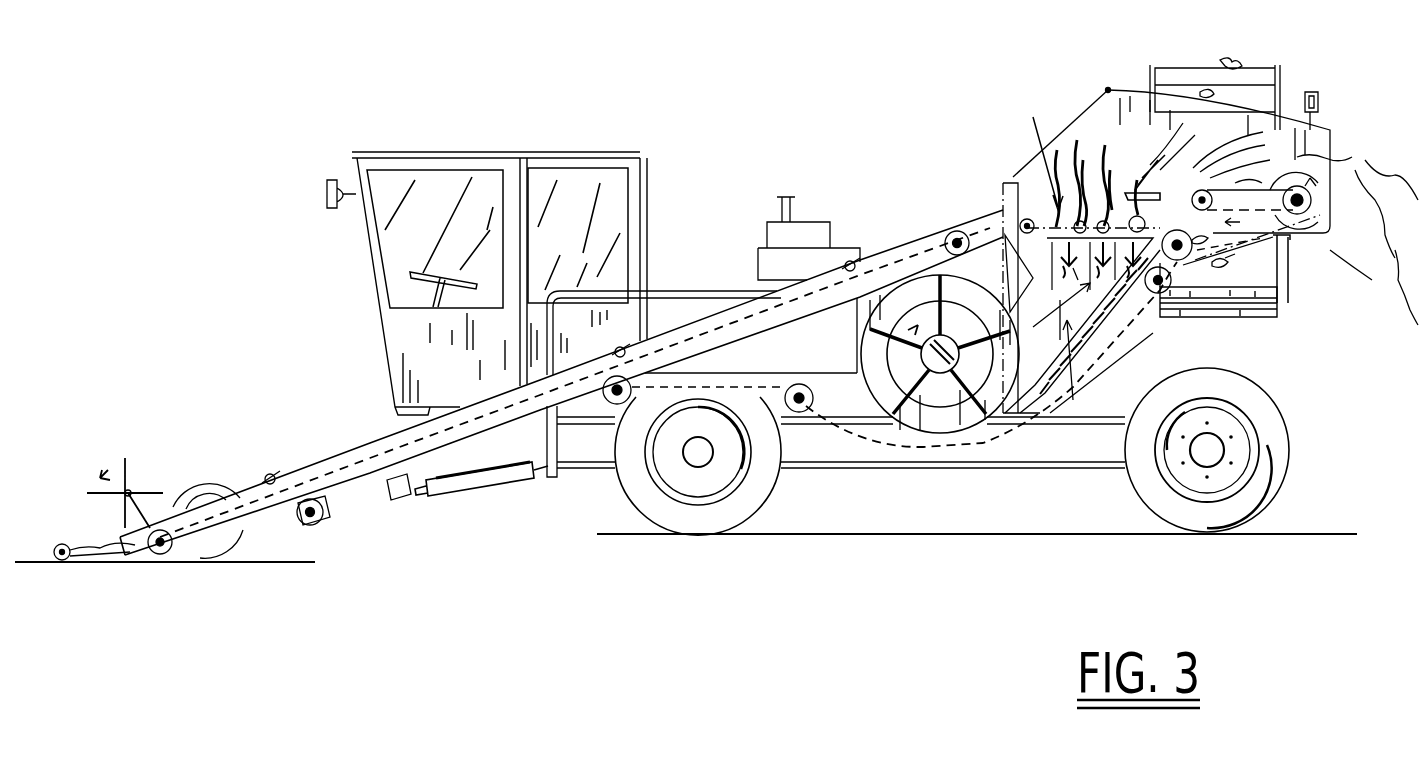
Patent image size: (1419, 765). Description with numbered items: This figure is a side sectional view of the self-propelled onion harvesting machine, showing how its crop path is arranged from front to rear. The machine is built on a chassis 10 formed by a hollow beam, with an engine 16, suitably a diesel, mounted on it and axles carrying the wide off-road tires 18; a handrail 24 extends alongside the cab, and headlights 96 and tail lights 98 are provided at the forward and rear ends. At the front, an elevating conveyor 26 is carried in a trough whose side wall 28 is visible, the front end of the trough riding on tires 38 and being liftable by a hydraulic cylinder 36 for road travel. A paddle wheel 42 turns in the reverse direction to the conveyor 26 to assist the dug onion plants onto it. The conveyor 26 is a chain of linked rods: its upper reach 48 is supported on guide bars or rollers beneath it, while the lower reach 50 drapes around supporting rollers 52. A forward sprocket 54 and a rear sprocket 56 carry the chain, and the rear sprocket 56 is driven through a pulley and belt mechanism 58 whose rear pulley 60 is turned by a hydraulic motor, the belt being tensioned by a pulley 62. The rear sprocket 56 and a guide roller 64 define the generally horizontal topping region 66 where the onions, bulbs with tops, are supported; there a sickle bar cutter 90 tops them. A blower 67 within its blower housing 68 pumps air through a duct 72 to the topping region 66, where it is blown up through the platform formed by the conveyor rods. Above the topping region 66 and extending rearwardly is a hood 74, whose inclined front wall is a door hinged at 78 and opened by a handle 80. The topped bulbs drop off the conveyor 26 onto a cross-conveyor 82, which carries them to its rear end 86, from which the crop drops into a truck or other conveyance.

The chassis 10 is at (1117, 457).
The engine 16 is at (843, 247).
The tires 18 is at (773, 492).
The handrail 24 is at (672, 290).
The elevating conveyor 26 is at (507, 400).
The side wall 28 is at (576, 382).
The hydraulic cylinder 36 is at (473, 494).
The tires 38 is at (238, 553).
The paddle wheel 42 is at (130, 472).
The upper reach 48 is at (397, 447).
The lower reach 50 is at (332, 503).
The rollers 52 is at (325, 524).
The sprocket 54 is at (162, 553).
The rear sprocket 56 is at (1183, 262).
The pulley and belt mechanism 58 is at (1270, 252).
The rear pulley 60 is at (1296, 232).
The pulley 62 is at (1243, 177).
The guide roller 64 is at (942, 224).
The topping region 66 is at (1140, 148).
The blower 67 is at (903, 408).
The blower housing 68 is at (940, 398).
The duct 72 is at (1005, 235).
The hood 74 is at (1137, 92).
The hinge 78 is at (1108, 90).
The handle 80 is at (1017, 175).
The cross-conveyor 82 is at (1258, 319).
The rear end 86 is at (1175, 70).
The sickle bar cutter 90 is at (1130, 188).
The headlights 96 is at (340, 186).
The tail lights 98 is at (1315, 92).